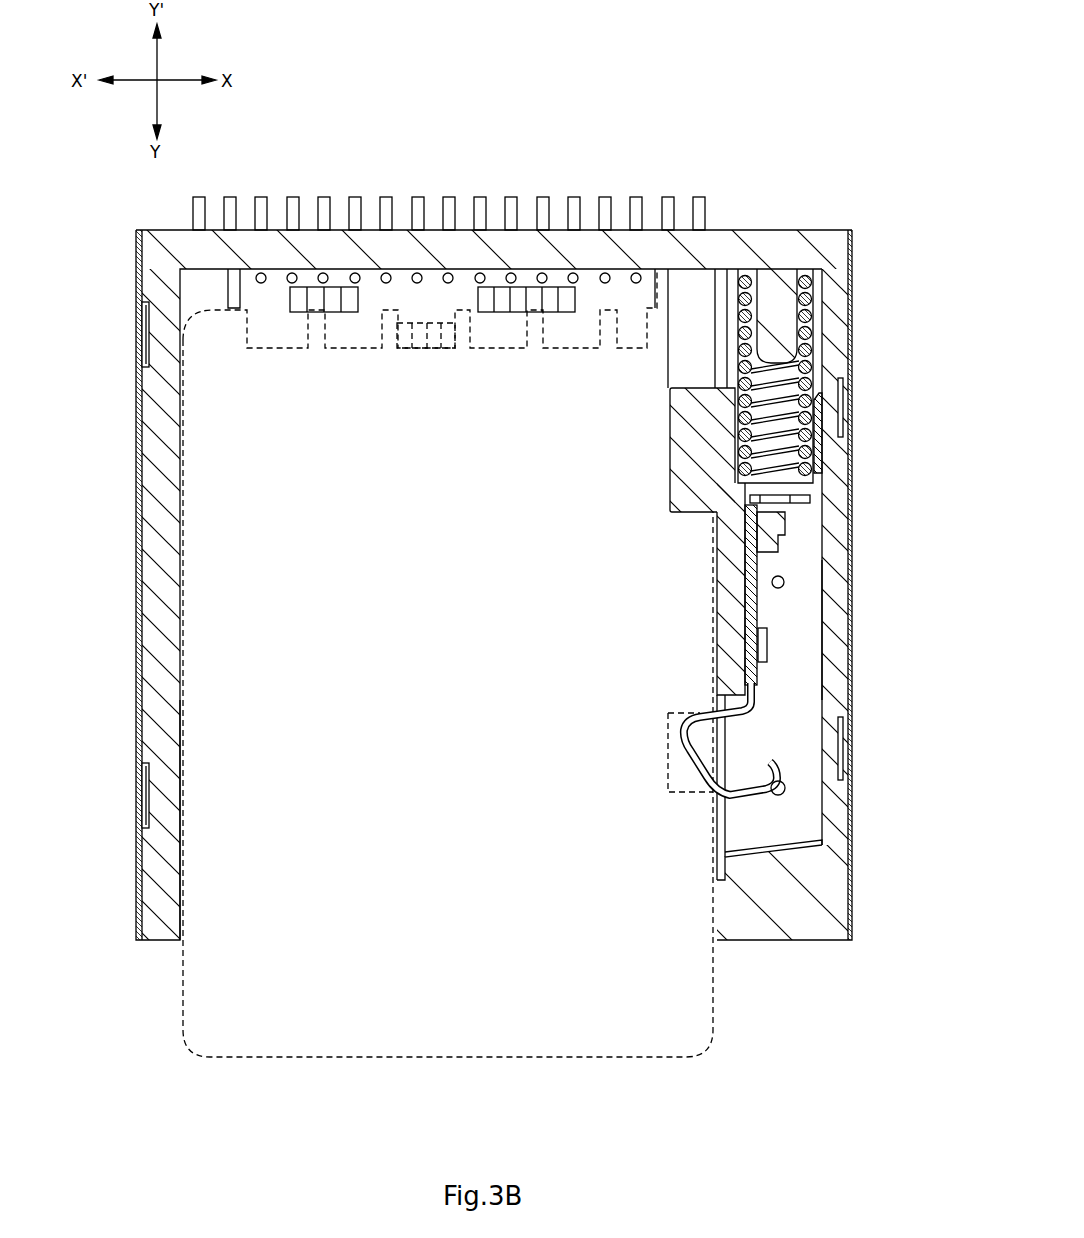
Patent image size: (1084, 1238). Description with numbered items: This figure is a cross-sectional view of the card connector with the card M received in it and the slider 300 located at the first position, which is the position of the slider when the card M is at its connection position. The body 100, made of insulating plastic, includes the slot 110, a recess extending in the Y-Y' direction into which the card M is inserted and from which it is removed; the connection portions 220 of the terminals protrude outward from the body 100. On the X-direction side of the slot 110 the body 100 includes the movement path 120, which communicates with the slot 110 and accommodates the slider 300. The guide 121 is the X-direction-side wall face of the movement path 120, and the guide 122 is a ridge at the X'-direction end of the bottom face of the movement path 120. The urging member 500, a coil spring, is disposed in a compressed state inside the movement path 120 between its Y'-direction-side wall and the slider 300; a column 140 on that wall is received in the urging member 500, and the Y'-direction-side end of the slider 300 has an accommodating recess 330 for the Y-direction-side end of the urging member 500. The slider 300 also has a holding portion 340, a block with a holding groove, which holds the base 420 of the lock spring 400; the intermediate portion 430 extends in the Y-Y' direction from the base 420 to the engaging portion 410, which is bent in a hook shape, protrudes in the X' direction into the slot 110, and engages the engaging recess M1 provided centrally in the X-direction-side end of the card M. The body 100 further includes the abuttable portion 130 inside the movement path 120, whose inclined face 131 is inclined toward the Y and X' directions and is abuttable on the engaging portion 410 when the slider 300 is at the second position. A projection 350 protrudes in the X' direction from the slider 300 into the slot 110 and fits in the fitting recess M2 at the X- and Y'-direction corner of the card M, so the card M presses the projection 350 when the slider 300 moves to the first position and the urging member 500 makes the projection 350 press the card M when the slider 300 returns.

The body 100 is at (160, 738).
The slot 110 is at (177, 892).
The movement path 120 is at (808, 603).
The guide 121 is at (823, 634).
The guide 122 is at (720, 290).
The abuttable portion 130 is at (772, 868).
The inclined face 131 is at (749, 862).
The column 140 is at (775, 295).
The connection portion 220 is at (230, 197).
The slider 300 is at (800, 594).
The accommodating recess 330 is at (820, 463).
The holding portion 340 is at (785, 522).
The projection 350 is at (702, 375).
The lock spring 400 is at (770, 706).
The engaging portion 410 is at (722, 745).
The base 420 is at (792, 500).
The intermediate portion 430 is at (760, 682).
The urging member 500 is at (806, 352).
The card M is at (455, 1010).
The engaging recess M1 is at (665, 775).
The fitting recess M2 is at (667, 418).